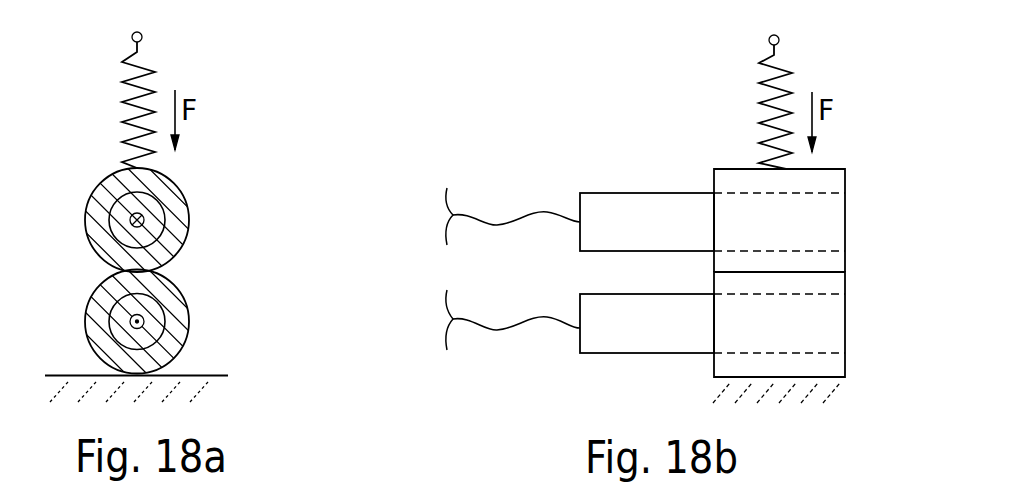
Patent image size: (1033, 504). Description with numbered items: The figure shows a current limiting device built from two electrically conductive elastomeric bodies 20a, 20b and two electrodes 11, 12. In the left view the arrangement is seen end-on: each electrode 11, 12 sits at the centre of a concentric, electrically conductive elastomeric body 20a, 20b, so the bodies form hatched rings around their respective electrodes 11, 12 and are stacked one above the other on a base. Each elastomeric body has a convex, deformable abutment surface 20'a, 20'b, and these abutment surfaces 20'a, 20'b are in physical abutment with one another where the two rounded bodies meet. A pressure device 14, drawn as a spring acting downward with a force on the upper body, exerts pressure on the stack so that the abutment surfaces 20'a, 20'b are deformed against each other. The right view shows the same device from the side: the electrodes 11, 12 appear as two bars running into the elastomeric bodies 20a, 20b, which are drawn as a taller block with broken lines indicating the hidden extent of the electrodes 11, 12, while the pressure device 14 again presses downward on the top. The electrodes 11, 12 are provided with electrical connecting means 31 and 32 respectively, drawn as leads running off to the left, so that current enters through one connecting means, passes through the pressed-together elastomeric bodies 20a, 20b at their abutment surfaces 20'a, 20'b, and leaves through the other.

In FIG. 18A, the pressure device 14 is at (127, 82).
In FIG. 18A, the electrode 11 is at (118, 203).
In FIG. 18B, the electrode 11 is at (643, 199).
In FIG. 18A, the electrode 12 is at (118, 328).
In FIG. 18B, the electrode 12 is at (628, 344).
In FIG. 18A, the electrically conductive elastomeric body 20a is at (144, 220).
In FIG. 18B, the electrically conductive elastomeric body 20a is at (746, 194).
In FIG. 18A, the electrically conductive elastomeric body 20b is at (150, 322).
In FIG. 18B, the electrically conductive elastomeric body 20b is at (738, 339).
In FIG. 18A, the abutment surface 20'a is at (164, 220).
In FIG. 18A, the abutment surface 20'b is at (165, 322).
In FIG. 18B, the electrical connecting means 31 is at (484, 216).
In FIG. 18B, the electrical connecting means 32 is at (484, 320).